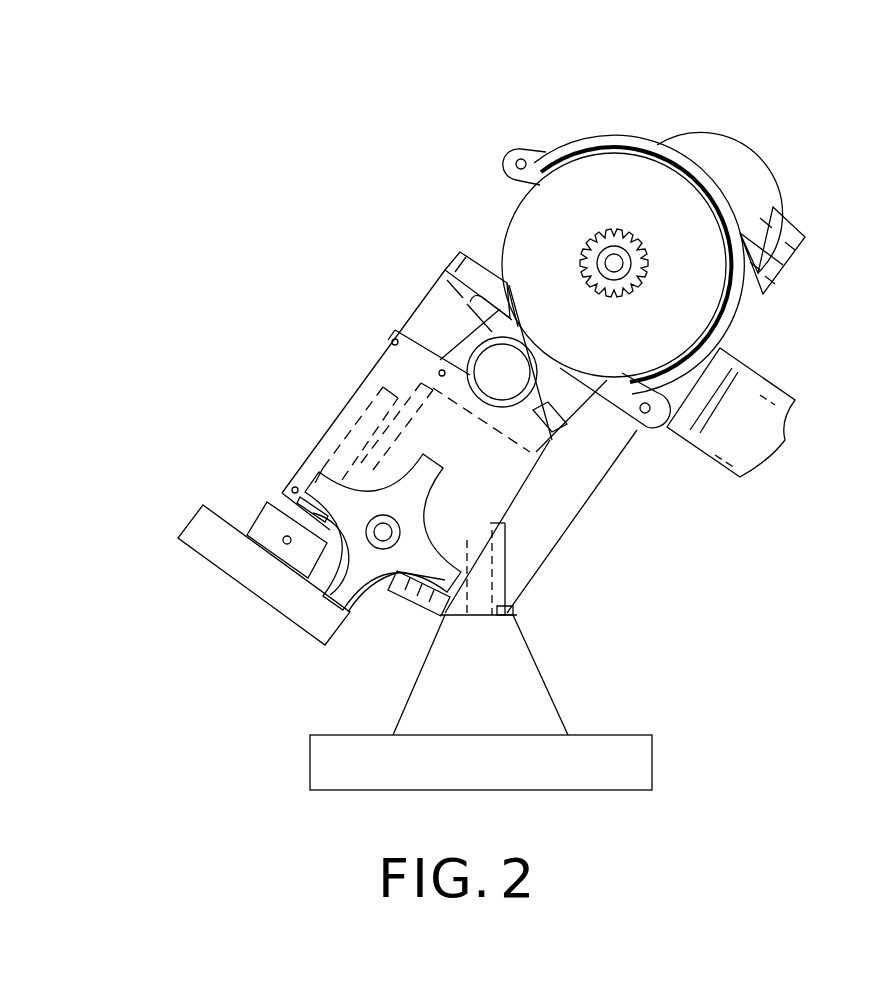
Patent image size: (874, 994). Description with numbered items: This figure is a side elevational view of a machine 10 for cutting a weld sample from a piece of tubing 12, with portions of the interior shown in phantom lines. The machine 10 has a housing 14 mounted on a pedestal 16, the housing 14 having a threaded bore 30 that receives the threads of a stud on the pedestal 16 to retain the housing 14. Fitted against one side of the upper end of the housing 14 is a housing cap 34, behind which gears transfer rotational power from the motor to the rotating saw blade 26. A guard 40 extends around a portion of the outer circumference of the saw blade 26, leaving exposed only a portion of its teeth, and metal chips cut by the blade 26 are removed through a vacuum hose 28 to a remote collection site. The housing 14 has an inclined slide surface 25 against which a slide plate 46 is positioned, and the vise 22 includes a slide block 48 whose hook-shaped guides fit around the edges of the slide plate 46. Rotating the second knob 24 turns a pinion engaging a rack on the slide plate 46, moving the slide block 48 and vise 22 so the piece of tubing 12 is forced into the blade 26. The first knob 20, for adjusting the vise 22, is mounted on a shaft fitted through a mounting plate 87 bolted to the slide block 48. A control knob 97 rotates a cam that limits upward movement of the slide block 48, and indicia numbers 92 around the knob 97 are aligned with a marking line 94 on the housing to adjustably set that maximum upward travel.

The machine 10 is at (491, 398).
The piece of tubing 12 is at (483, 360).
The housing 14 is at (683, 200).
The pedestal 16 is at (548, 682).
The first knob 20 is at (190, 523).
The vise 22 is at (443, 240).
The second knob 24 is at (488, 364).
The slide surface 25 is at (508, 283).
The saw blade 26 is at (705, 313).
The vacuum hose 28 is at (760, 377).
The threaded bore 30 is at (513, 607).
The housing cap 34 is at (728, 132).
The guard 40 is at (604, 132).
The slide plate 46 is at (618, 443).
The slide block 48 is at (368, 367).
The mounting plate 87 is at (280, 493).
The indicia numbers 92 is at (350, 610).
The marking line 94 is at (462, 580).
The control knob 97 is at (413, 600).